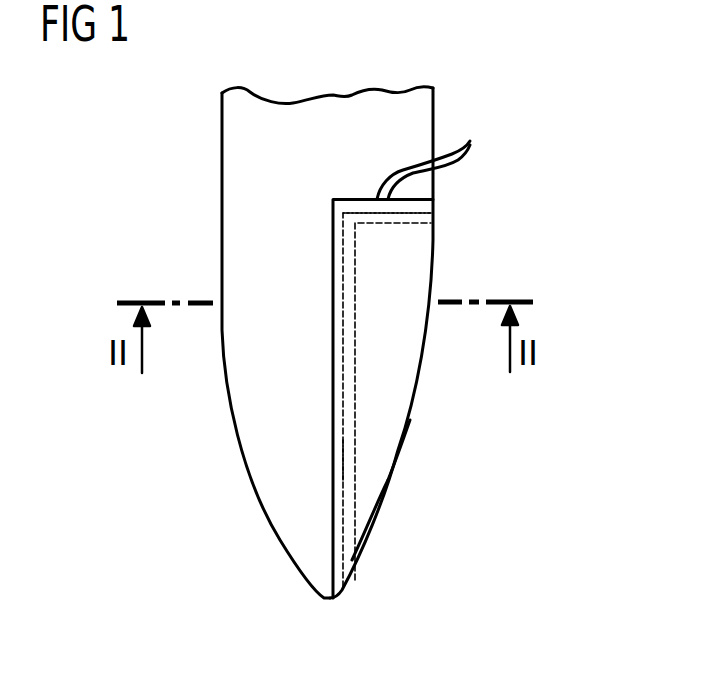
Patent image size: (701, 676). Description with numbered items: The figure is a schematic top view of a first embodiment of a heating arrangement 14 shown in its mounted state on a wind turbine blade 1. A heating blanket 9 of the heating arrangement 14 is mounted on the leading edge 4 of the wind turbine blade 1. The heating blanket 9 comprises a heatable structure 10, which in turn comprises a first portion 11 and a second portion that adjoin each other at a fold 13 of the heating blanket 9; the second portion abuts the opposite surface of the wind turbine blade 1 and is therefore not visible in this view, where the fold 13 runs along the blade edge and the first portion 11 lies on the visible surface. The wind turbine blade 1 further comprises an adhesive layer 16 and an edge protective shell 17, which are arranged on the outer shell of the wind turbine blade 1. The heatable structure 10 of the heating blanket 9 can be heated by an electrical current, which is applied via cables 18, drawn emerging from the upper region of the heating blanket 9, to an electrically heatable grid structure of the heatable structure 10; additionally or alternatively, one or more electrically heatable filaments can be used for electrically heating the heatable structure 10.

The wind turbine blade 1 is at (237, 141).
The leading edge 4 is at (387, 490).
The heating blanket 9 is at (417, 277).
The heatable structure 10 is at (390, 395).
The first portion 11 is at (367, 460).
The fold 13 is at (400, 445).
The heating arrangement 14 is at (455, 242).
The adhesive layer 16 is at (428, 213).
The edge protective shell 17 is at (402, 350).
The cables 18 is at (465, 144).